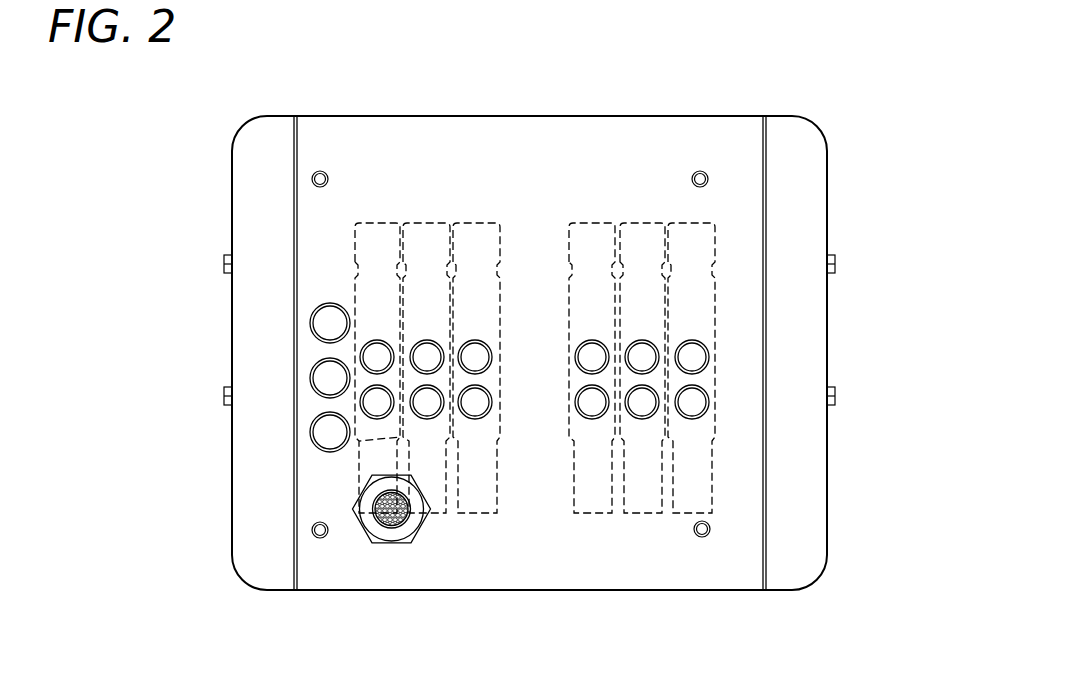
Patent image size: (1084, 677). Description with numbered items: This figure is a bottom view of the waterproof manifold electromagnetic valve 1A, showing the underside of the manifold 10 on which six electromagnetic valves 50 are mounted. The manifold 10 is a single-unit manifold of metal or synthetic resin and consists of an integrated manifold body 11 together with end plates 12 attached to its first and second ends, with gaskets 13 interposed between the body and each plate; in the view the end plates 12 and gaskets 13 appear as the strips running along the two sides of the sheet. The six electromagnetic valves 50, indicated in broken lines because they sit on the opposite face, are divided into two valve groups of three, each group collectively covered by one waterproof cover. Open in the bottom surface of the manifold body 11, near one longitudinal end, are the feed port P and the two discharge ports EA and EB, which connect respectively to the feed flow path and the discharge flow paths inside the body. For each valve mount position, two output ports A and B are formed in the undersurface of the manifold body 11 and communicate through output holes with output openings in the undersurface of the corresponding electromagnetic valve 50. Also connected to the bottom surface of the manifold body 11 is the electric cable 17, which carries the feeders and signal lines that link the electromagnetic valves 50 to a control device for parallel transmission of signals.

The manifold electromagnetic valve 1A is at (613, 36).
The manifold 10 is at (670, 87).
The manifold body 11 is at (519, 117).
The end plate 12 is at (265, 187).
The gasket 13 is at (294, 221).
The electric cable 17 is at (395, 530).
The electromagnetic valve 50 is at (472, 215).
The output port A is at (480, 402).
The output port B is at (477, 356).
The discharge port EA is at (330, 432).
The discharge port EB is at (330, 323).
The feed port P is at (330, 378).